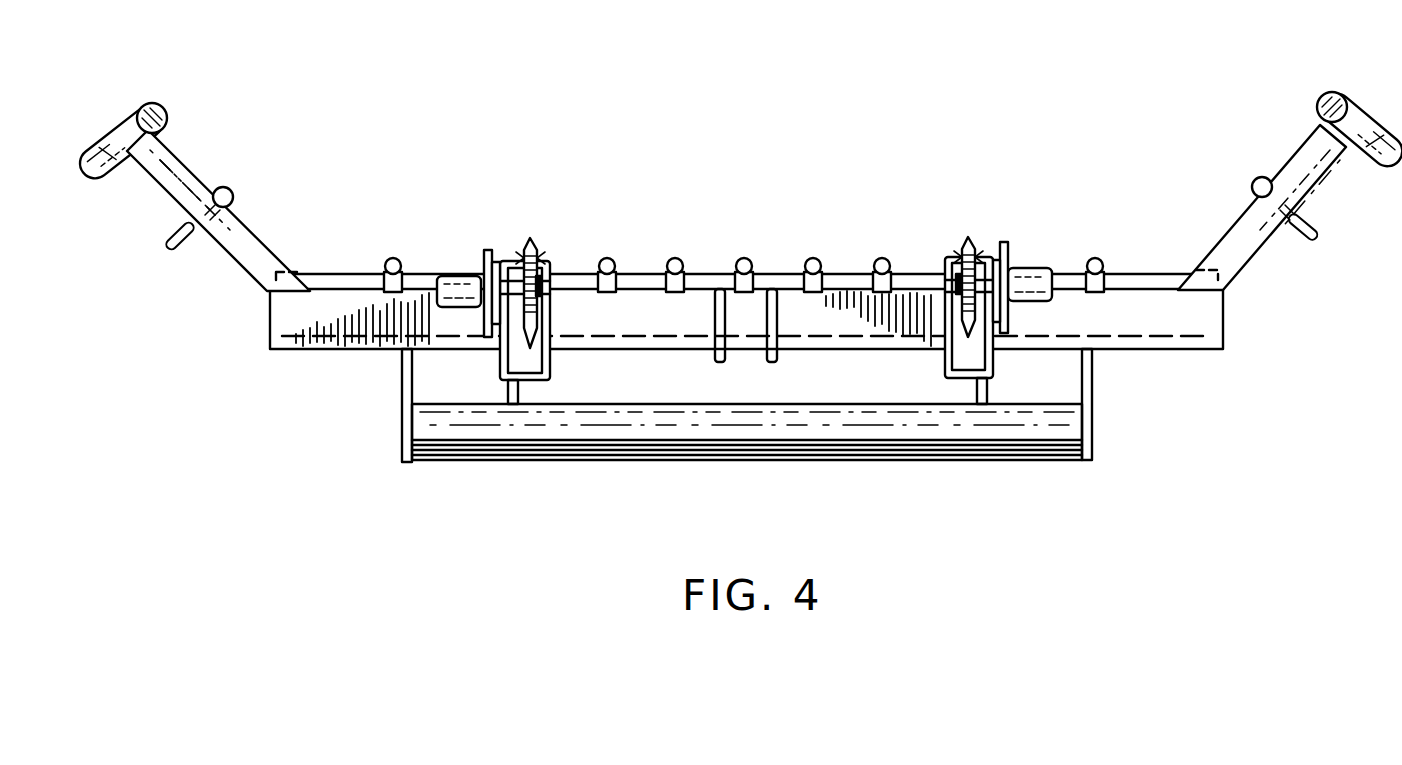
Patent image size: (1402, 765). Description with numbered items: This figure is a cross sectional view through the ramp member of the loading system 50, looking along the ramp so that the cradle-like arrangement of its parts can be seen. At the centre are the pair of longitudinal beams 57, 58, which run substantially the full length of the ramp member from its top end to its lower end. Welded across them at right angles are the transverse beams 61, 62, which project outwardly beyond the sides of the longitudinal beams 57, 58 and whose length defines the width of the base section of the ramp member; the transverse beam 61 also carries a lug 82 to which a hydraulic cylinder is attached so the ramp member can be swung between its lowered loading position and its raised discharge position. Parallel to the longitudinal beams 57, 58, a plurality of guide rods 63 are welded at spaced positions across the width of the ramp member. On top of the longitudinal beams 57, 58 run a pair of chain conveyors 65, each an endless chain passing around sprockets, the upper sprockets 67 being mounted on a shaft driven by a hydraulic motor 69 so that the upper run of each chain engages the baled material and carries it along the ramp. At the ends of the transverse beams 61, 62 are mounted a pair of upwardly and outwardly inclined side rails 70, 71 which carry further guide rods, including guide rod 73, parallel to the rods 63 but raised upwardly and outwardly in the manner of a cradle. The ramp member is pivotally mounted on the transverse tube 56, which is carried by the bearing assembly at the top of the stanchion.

The loading system 50 is at (738, 284).
The transverse tube 56 is at (847, 458).
The longitudinal beam 57 is at (550, 266).
The longitudinal beam 58 is at (943, 268).
The transverse beam 61 is at (282, 312).
The transverse beam 62 is at (780, 268).
The guide rod 63 is at (386, 262).
The chain conveyor 65 is at (527, 245).
The sprocket 67 is at (535, 314).
The hydraulic motor 69 is at (458, 278).
The side rail 70 is at (1258, 253).
The side rail 71 is at (183, 160).
The guide rod 73 is at (233, 191).
The lug 82 is at (778, 360).